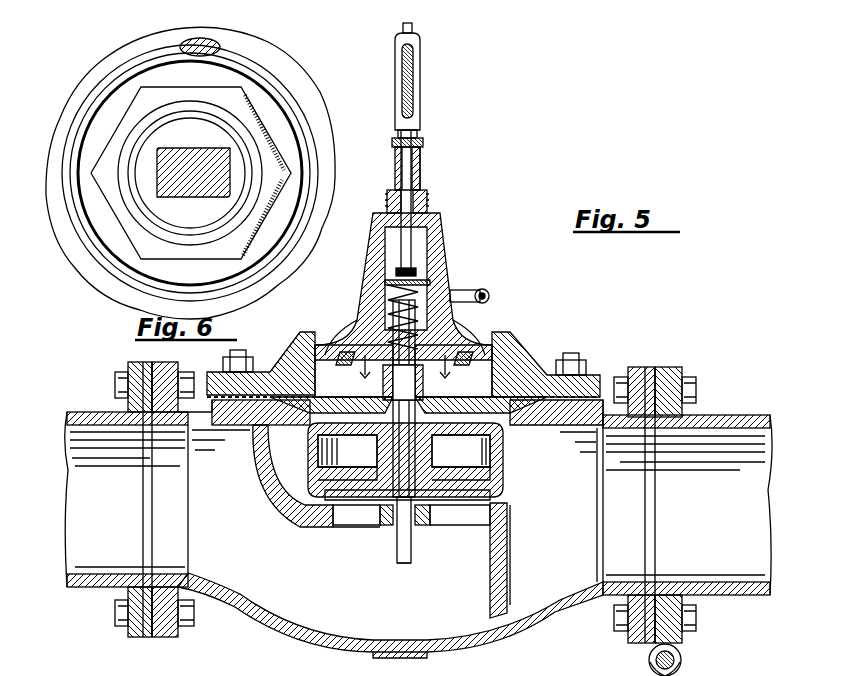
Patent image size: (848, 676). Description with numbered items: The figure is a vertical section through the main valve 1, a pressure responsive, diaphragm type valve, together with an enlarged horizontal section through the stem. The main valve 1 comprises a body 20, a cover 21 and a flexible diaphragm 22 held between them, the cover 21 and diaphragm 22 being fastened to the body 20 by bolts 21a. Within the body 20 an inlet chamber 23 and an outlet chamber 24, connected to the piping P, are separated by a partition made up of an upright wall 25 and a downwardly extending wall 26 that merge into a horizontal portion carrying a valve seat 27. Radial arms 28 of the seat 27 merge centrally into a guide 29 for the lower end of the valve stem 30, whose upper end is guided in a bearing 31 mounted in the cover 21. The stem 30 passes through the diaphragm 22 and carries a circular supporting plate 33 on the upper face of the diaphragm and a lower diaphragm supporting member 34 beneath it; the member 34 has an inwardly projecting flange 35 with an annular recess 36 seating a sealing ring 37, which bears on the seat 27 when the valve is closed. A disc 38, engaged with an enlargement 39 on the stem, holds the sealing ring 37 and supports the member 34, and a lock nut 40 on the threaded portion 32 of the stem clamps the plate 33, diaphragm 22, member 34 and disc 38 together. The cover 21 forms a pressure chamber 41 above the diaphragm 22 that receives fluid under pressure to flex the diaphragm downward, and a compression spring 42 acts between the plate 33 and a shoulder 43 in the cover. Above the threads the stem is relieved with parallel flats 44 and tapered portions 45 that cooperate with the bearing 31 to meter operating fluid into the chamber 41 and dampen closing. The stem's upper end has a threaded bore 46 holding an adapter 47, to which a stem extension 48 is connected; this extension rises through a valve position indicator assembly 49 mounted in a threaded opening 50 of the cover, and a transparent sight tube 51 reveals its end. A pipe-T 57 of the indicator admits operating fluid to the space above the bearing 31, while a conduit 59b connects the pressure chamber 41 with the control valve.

In FIG. 5, the main valve 1 is at (368, 650).
In FIG. 5, the body 20 is at (262, 617).
In FIG. 5, the cover 21 is at (535, 375).
In FIG. 5, the bolts 21a is at (240, 356).
In FIG. 5, the flexible diaphragm 22 is at (585, 400).
In FIG. 5, the inlet chamber 23 is at (243, 541).
In FIG. 5, the outlet chamber 24 is at (579, 517).
In FIG. 5, the upright wall 25 is at (508, 562).
In FIG. 5, the downwardly extending wall 26 is at (258, 450).
In FIG. 5, the valve seat 27 is at (333, 525).
In FIG. 5, the radial arms 28 is at (368, 525).
In FIG. 5, the guide 29 is at (397, 545).
In FIG. 5, the valve stem 30 is at (412, 560).
In FIG. 5, the bearing 31 is at (430, 305).
In FIG. 5, the threaded portion 32 is at (375, 386).
In FIG. 5, the circular supporting plate 33 is at (505, 400).
In FIG. 6, the circular supporting plate 33 is at (55, 218).
In FIG. 5, the lower diaphragm supporting member 34 is at (503, 450).
In FIG. 5, the inwardly projecting flange 35 is at (485, 470).
In FIG. 5, the annular recess 36 is at (503, 475).
In FIG. 5, the sealing ring 37 is at (505, 493).
In FIG. 5, the disc 38 is at (362, 520).
In FIG. 5, the enlargement 39 is at (390, 470).
In FIG. 5, the lock nut 40 is at (413, 388).
In FIG. 6, the lock nut 40 is at (118, 153).
In FIG. 5, the pressure chamber 41 is at (290, 400).
In FIG. 5, the compression spring 42 is at (453, 371).
In FIG. 6, the compression spring 42 is at (262, 65).
In FIG. 5, the shoulder 43 is at (355, 318).
In FIG. 5, the parallel flats 44 is at (452, 325).
In FIG. 6, the parallel flats 44 is at (198, 148).
In FIG. 5, the tapered portions 45 is at (365, 320).
In FIG. 5, the threaded bore 46 is at (360, 275).
In FIG. 5, the adapter 47 is at (418, 270).
In FIG. 5, the stem extension 48 is at (420, 170).
In FIG. 5, the valve position indicator assembly 49 is at (420, 100).
In FIG. 5, the threaded opening 50 is at (425, 218).
In FIG. 5, the transparent sight tube 51 is at (420, 62).
In FIG. 5, the pipe-T 57 is at (424, 147).
In FIG. 5, the conduit 59b is at (470, 290).
In FIG. 5, the pipe P is at (88, 412).